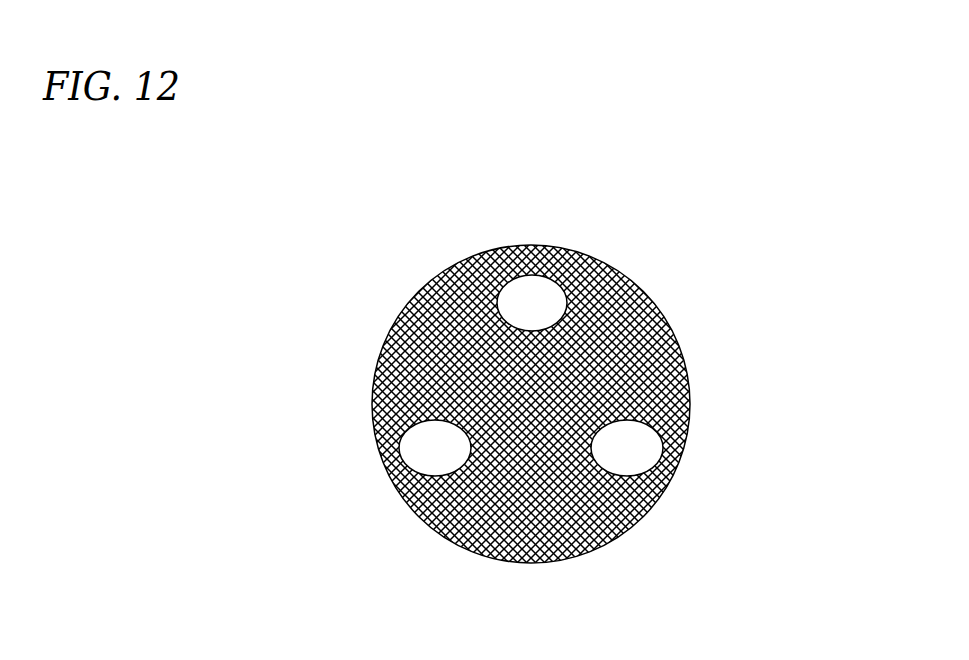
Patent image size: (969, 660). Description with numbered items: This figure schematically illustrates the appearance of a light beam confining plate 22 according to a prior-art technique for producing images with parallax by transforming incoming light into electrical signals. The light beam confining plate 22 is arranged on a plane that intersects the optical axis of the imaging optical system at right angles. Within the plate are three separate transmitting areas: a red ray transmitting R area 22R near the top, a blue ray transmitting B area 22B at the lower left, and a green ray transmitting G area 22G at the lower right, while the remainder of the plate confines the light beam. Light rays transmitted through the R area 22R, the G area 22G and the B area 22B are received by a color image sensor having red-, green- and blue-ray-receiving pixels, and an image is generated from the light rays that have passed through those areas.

The light beam confining plate 22 is at (398, 313).
The red ray transmitting R area 22R is at (547, 302).
The blue ray transmitting B area 22B is at (423, 448).
The green ray transmitting G area 22G is at (620, 467).